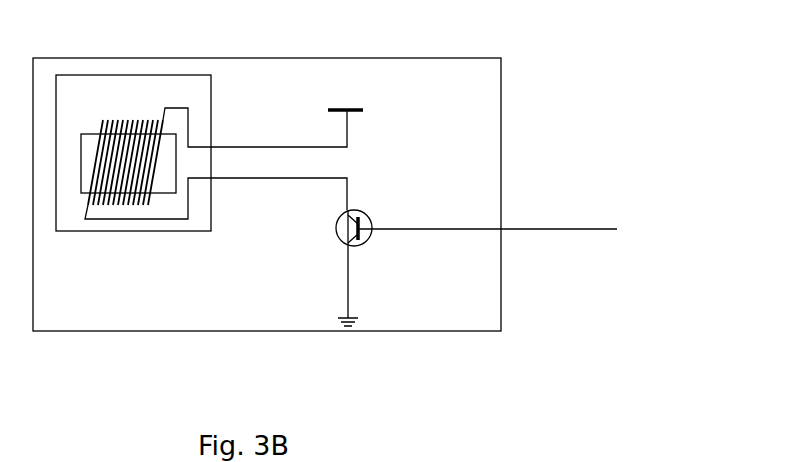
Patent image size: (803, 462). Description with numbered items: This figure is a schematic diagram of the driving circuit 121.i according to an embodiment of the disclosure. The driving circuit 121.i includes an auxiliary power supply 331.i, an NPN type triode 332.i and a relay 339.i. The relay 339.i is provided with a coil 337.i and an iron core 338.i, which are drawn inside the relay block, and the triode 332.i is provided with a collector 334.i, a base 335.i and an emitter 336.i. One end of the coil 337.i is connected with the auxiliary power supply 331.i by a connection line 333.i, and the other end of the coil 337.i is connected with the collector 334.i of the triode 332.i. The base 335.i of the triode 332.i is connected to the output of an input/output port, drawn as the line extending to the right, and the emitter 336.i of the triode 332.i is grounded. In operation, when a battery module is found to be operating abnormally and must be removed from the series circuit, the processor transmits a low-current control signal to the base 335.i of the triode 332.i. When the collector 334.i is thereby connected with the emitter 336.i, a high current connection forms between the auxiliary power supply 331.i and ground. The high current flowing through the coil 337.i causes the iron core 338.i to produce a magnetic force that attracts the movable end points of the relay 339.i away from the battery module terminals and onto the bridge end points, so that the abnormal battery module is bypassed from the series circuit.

The driving circuit 121.i is at (393, 75).
The relay 339.i is at (198, 102).
The iron core 338.i is at (98, 136).
The coil 337.i is at (150, 121).
The supply connection line 333.i is at (275, 147).
The collector 334.i is at (279, 178).
The auxiliary power supply 331.i is at (337, 110).
The NPN type triode 332.i is at (339, 223).
The base 335.i is at (395, 228).
The emitter 336.i is at (345, 255).